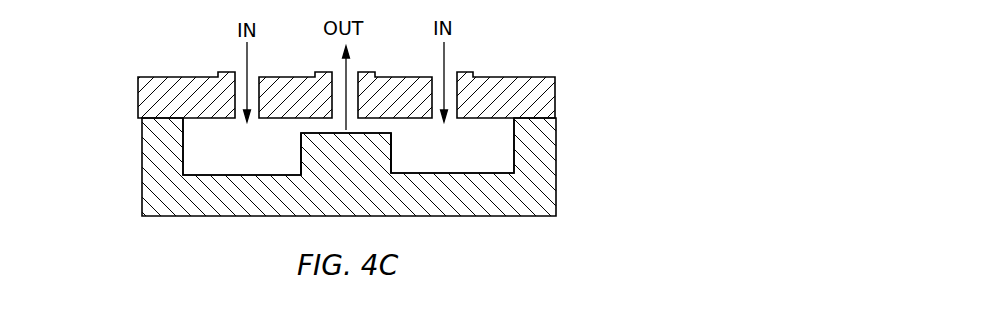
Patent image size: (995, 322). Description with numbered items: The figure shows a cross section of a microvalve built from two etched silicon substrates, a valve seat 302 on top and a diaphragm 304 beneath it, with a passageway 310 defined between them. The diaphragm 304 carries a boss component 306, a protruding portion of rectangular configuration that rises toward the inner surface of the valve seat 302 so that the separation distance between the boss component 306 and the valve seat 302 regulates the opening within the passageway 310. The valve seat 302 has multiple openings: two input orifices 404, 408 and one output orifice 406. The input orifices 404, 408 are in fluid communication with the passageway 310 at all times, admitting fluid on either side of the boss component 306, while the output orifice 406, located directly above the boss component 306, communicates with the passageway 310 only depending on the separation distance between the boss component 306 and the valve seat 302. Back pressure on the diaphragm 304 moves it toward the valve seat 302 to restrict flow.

The valve seat 302 is at (152, 100).
The diaphragm 304 is at (152, 200).
The boss component 306 is at (375, 163).
The passageway 310 is at (252, 157).
The input orifice 404 is at (248, 70).
The output orifice 406 is at (348, 68).
The input orifice 408 is at (446, 69).